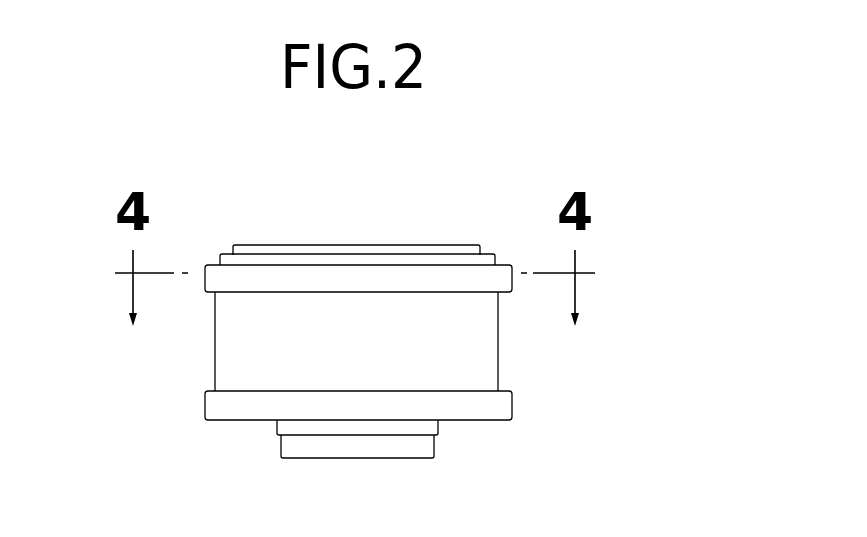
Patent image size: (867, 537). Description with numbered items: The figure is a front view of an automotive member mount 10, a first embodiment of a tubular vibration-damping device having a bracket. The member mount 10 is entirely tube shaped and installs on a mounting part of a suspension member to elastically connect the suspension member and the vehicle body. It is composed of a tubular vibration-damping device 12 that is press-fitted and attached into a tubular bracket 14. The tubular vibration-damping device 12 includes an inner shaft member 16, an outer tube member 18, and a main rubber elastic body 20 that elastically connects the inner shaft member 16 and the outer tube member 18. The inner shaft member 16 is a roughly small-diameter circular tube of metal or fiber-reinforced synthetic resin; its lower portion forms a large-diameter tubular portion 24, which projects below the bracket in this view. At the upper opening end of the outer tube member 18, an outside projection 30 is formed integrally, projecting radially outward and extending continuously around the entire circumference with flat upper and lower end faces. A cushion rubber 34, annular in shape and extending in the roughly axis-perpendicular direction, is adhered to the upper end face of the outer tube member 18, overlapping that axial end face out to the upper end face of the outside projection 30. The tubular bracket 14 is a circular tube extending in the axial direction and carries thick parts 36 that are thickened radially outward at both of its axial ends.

The member mount 10 is at (540, 158).
The tubular vibration-damping device 12 is at (483, 237).
The tubular bracket 14 is at (500, 358).
The inner shaft member 16 is at (279, 455).
The outer tube member 18 is at (222, 253).
The main rubber elastic body 20 is at (288, 245).
The large-diameter tubular portion 24 is at (358, 447).
The outside projection 30 is at (335, 260).
The cushion rubber 34 is at (397, 250).
The thick parts 36 is at (238, 283).